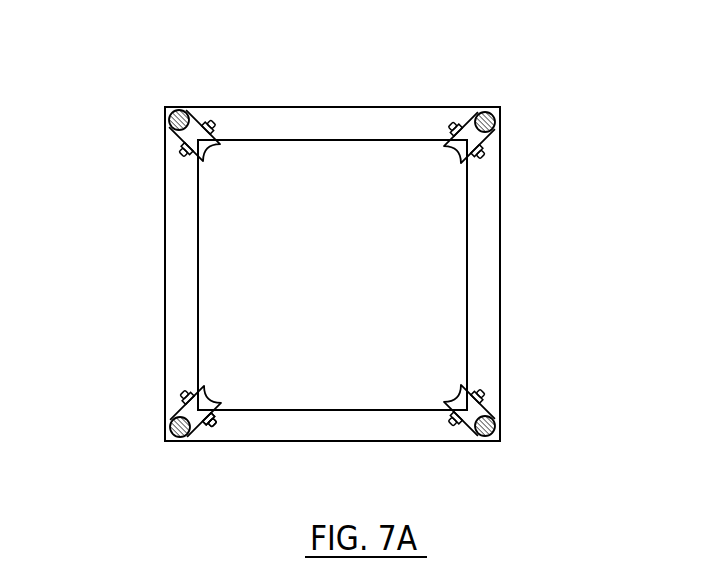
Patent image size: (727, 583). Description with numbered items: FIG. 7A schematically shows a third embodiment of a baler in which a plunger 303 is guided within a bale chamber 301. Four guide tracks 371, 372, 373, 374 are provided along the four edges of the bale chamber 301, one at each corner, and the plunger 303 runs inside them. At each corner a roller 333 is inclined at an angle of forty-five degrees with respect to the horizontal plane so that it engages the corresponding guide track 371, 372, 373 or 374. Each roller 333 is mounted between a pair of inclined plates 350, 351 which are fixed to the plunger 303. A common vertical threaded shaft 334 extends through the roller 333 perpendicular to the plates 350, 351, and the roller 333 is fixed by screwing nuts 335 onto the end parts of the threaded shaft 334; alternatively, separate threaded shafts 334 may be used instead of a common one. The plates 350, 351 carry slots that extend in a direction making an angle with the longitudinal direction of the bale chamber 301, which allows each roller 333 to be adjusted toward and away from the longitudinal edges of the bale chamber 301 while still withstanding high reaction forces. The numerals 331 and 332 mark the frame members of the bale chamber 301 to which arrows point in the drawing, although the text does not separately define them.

The bale chamber 301 is at (490, 265).
The plunger 303 is at (468, 210).
The first frame member 331 is at (208, 98).
The second frame member 332 is at (430, 97).
The roller 333 is at (186, 157).
The threaded shaft 334 is at (213, 430).
The nut 335 is at (180, 391).
The inclined plate 350 is at (198, 386).
The inclined plate 351 is at (222, 410).
The guide track 371 is at (169, 120).
The guide track 372 is at (169, 434).
The guide track 373 is at (495, 121).
The guide track 374 is at (496, 430).